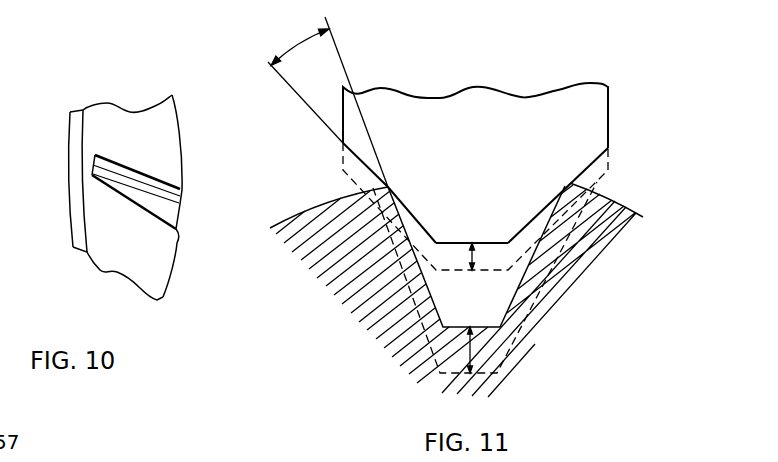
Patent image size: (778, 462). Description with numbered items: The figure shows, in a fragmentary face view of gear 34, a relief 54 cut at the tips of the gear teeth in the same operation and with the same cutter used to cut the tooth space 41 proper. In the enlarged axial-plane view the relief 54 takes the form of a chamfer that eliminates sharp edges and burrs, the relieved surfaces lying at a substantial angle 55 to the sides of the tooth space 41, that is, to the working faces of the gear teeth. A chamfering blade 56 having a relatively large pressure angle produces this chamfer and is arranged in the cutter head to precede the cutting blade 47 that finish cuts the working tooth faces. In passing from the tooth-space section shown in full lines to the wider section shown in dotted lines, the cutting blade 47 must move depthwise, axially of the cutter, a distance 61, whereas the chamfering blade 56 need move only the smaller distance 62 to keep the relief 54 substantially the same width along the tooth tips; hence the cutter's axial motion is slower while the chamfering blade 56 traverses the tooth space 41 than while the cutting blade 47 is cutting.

In FIG. 10, the gear 34 is at (123, 117).
In FIG. 11, the gear 34 is at (598, 244).
In FIG. 10, the tooth space 41 is at (168, 195).
In FIG. 11, the tooth space 41 is at (485, 297).
In FIG. 11, the cutting blade 47 is at (470, 298).
In FIG. 10, the relief 54 is at (201, 151).
In FIG. 11, the relief 54 is at (372, 184).
In FIG. 11, the angle 55 is at (303, 42).
In FIG. 11, the chamfering blade 56 is at (513, 149).
In FIG. 11, the distance 61 is at (468, 352).
In FIG. 11, the distance 62 is at (470, 252).